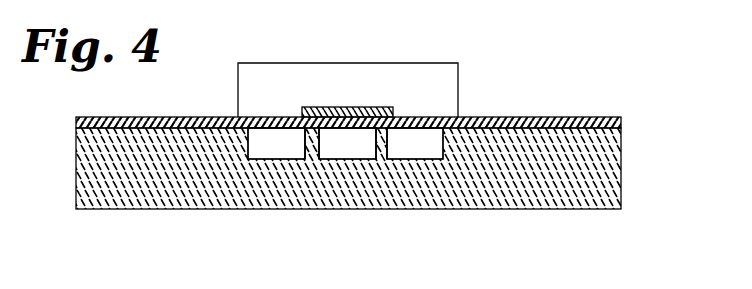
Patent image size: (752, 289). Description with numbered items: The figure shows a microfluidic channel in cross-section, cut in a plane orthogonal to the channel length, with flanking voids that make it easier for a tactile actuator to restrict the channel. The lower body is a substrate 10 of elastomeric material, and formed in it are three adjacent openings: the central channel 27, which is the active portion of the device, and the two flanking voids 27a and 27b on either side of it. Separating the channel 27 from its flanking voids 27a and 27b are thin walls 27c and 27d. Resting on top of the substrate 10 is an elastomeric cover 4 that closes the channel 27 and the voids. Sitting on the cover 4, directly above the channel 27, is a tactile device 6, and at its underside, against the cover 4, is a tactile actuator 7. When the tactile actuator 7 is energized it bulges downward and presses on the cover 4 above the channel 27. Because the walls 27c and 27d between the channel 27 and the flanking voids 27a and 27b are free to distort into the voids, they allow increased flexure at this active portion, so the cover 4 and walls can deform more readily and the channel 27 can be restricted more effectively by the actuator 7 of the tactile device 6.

The cover 4 is at (621, 127).
The tactile device 6 is at (437, 93).
The tactile actuator 7 is at (340, 106).
The substrate 10 is at (592, 172).
The channel 27 is at (347, 146).
The flanking void 27a is at (269, 146).
The flanking void 27b is at (425, 146).
The wall 27c is at (312, 147).
The wall 27d is at (379, 147).